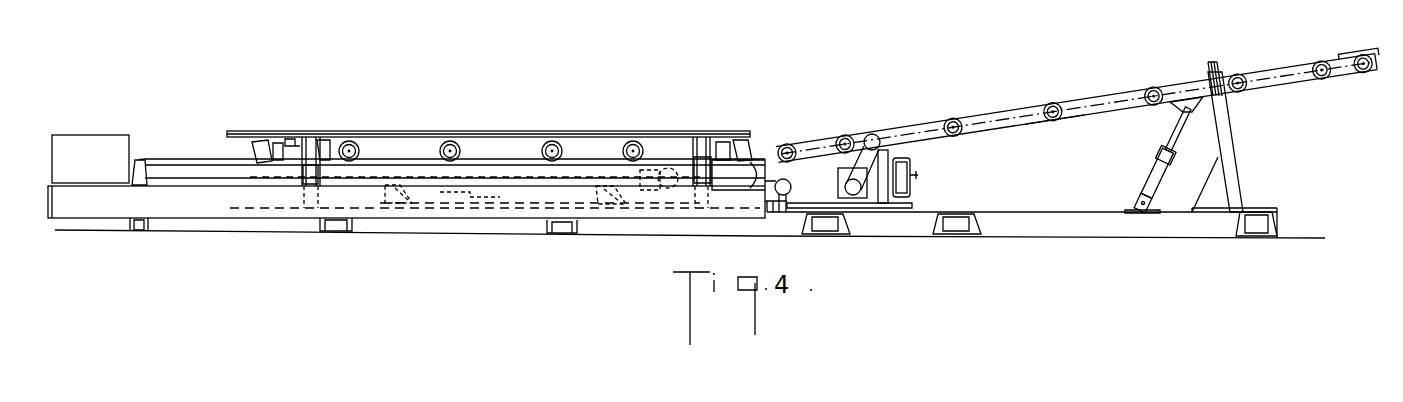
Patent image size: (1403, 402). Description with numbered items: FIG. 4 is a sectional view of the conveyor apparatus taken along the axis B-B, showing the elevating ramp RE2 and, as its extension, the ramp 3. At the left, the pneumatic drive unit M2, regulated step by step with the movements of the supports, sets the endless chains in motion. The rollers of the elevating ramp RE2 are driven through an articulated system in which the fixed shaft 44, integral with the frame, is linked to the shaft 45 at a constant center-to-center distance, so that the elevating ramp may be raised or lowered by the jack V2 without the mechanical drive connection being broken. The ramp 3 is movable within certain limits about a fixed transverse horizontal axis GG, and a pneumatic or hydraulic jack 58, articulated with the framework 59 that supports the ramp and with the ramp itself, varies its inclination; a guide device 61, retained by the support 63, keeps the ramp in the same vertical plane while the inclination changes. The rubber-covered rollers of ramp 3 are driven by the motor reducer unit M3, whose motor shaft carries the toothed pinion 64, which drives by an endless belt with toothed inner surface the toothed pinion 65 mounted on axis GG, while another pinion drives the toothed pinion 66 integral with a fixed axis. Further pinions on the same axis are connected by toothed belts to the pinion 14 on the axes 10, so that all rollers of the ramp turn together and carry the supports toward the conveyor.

The pneumatic drive unit M2 is at (112, 133).
The elevating ramp RE2 is at (474, 136).
The shaft 45 is at (667, 178).
The fixed shaft 44 is at (688, 183).
The jack V2 is at (647, 220).
The toothed pinion 65 is at (868, 135).
The transverse horizontal axis GG is at (855, 182).
The ramp 3 is at (996, 105).
The toothed pinion 14 is at (1058, 99).
The axes 10 is at (1055, 121).
The guide device 61 is at (1217, 72).
The pneumatic or hydraulic jack 58 is at (1160, 175).
The support 63 is at (1242, 180).
The framework 59 is at (1050, 231).
The motor reducer unit M3 is at (912, 188).
The toothed pinion 66 is at (780, 196).
The toothed pinion 64 is at (856, 196).